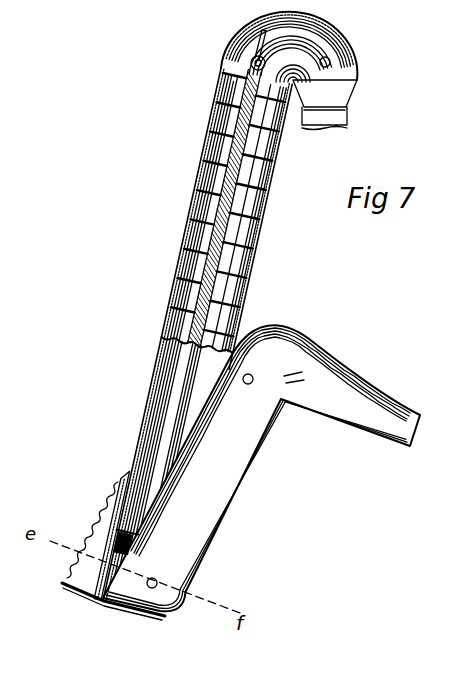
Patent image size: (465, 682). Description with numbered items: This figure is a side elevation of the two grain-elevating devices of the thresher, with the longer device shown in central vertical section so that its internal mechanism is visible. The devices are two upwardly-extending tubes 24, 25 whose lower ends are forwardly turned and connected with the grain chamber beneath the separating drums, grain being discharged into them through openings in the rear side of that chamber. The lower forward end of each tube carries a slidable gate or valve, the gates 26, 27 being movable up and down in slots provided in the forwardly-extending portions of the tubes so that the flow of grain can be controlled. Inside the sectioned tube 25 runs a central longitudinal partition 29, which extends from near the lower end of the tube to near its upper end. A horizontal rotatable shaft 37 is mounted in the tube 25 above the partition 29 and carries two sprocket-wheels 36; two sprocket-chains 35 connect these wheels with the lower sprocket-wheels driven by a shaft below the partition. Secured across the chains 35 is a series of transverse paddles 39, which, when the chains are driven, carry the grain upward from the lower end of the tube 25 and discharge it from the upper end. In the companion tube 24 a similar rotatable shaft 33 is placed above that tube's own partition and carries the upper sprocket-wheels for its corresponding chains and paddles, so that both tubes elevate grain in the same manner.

The upwardly-extending tube 24 is at (241, 472).
The upwardly-extending tube 25 is at (250, 271).
The slidable gate or valve 26 is at (128, 552).
The slidable gate or valve 27 is at (128, 507).
The central longitudinal partition 29 is at (240, 183).
The rotatable shaft 33 is at (252, 375).
The sprocket-chains 35 is at (268, 221).
The sprocket-wheels 36 is at (265, 61).
The horizontal rotatable shaft 37 is at (253, 59).
The transverse paddles 39 is at (204, 133).